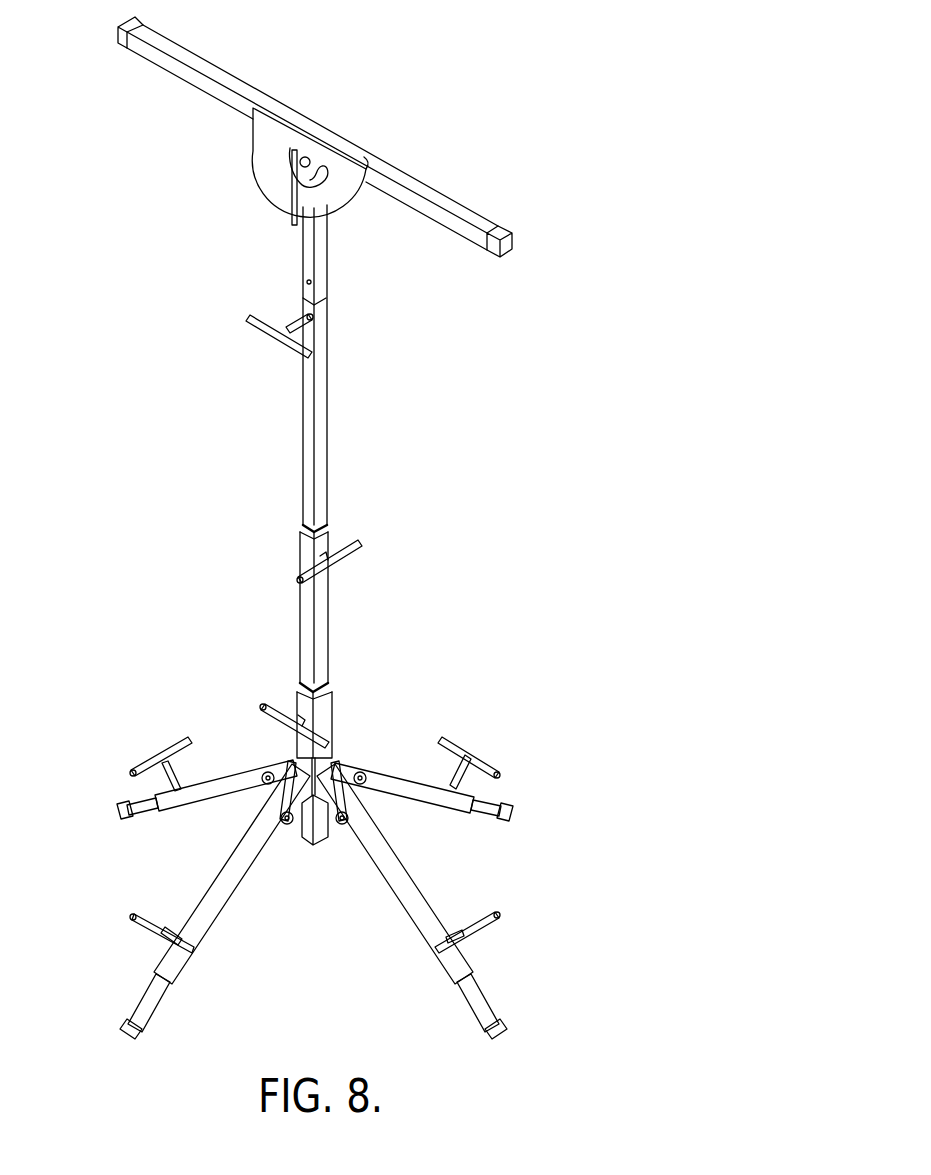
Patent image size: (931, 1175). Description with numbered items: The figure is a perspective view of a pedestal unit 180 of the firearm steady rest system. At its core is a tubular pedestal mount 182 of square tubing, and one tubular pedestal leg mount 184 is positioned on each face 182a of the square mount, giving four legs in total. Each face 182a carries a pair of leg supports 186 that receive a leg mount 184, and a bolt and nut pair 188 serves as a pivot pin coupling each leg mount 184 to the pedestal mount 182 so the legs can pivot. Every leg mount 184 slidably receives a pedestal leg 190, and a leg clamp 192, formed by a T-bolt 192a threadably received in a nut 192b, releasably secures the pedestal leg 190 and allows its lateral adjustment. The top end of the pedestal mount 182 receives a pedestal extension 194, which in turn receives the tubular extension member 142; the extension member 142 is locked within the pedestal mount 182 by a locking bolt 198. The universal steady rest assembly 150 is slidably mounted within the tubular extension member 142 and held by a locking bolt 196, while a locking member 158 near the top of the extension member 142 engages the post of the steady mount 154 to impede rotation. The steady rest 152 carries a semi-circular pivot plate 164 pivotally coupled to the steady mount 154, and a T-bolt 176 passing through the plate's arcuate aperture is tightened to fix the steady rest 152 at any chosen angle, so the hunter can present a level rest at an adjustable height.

The tubular extension member 142 is at (393, 399).
The universal steady rest assembly 150 is at (343, 258).
The steady rest 152 is at (412, 187).
The steady mount 154 is at (303, 267).
The locking member 158 is at (262, 340).
The pivot plate 164 is at (347, 190).
The T-bolt 176 is at (292, 210).
The pedestal unit 180 is at (93, 358).
The tubular pedestal mount 182 is at (328, 710).
The face 182a is at (330, 708).
The tubular pedestal leg mount 184 is at (405, 925).
The leg support 186 is at (313, 838).
The bolt and nut pair 188 is at (340, 840).
The pedestal leg 190 is at (505, 1017).
The leg clamp 192 is at (497, 930).
The T-bolt 192a is at (465, 930).
The nut 192b is at (140, 770).
The pedestal extension 194 is at (328, 607).
The locking bolt 196 is at (343, 550).
The locking bolt 198 is at (263, 710).